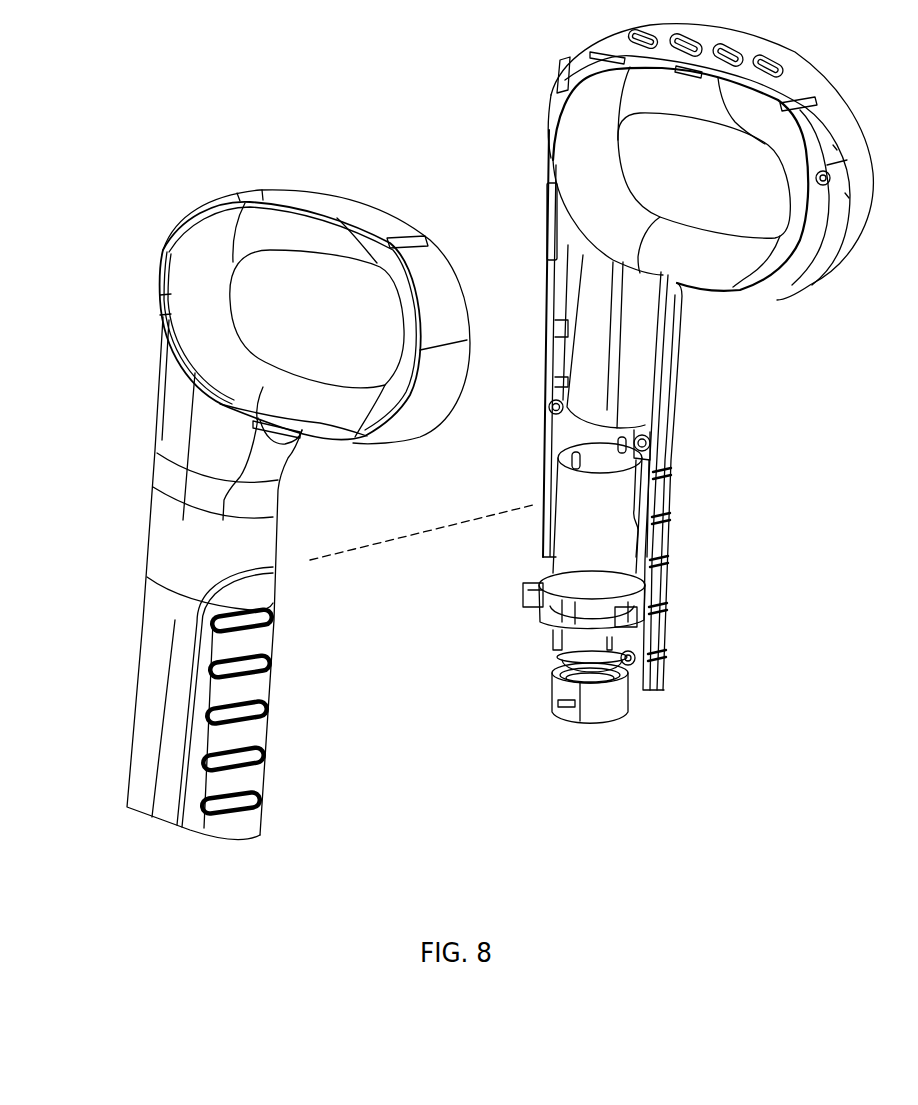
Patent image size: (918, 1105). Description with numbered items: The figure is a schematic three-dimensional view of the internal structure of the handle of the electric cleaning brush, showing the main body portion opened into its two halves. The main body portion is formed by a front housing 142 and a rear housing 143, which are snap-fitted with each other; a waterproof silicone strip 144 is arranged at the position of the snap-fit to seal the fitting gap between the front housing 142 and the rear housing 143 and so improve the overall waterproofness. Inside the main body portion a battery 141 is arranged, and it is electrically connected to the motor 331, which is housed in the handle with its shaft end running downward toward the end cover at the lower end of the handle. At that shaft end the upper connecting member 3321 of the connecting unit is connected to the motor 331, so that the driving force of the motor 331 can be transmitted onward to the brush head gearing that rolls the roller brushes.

The battery 141 is at (630, 363).
The front housing 142 is at (168, 545).
The rear housing 143 is at (547, 207).
The waterproof silicone strip 144 is at (653, 440).
The motor 331 is at (612, 537).
The upper connecting member 3321 is at (603, 705).